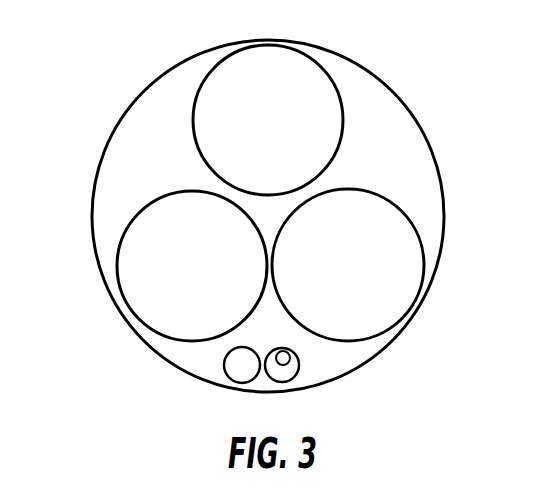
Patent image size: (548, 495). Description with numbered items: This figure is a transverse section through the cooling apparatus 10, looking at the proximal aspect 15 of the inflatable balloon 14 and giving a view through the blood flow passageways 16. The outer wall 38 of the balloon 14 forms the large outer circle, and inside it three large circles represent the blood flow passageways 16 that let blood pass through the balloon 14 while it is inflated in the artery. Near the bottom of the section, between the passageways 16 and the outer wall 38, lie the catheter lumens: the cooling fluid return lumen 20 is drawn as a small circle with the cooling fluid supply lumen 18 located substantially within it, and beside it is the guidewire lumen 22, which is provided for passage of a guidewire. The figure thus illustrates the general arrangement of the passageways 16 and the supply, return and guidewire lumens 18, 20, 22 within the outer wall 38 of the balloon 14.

The cooling apparatus 10 is at (112, 347).
The inflatable balloon 14 is at (251, 216).
The proximal aspect 15 is at (402, 68).
The blood flow passageways 16 is at (301, 176).
The cooling fluid supply lumen 18 is at (349, 380).
The cooling fluid return lumen 20 is at (309, 388).
The guidewire lumen 22 is at (214, 387).
The outer wall 38 is at (251, 201).